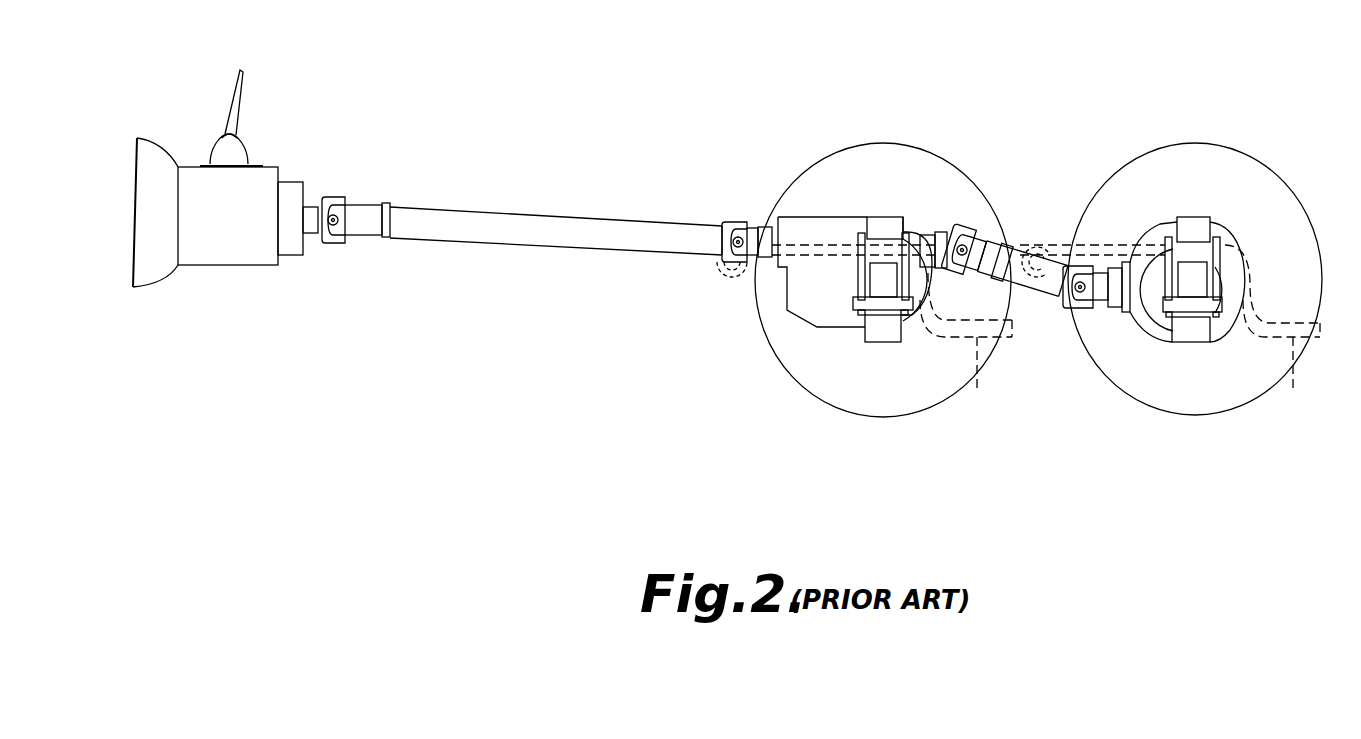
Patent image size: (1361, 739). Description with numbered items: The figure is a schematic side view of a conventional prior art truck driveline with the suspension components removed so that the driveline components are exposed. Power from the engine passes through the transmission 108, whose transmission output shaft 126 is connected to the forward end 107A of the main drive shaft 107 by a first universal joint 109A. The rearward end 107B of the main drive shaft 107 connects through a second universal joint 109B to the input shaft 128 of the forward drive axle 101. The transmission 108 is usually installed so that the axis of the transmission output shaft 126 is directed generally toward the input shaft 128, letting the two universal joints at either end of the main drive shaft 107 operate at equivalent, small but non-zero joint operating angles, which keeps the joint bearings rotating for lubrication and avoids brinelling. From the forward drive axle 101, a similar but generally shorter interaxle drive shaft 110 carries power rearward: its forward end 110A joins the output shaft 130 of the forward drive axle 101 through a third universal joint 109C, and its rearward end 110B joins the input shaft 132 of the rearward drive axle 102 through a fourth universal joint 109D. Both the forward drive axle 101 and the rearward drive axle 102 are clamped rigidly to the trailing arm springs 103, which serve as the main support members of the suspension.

The forward drive axle 101 is at (835, 297).
The rearward drive axle 102 is at (1191, 320).
The trailing arm springs 103 is at (977, 393).
The main drive shaft 107 is at (493, 242).
The forward end of the main drive shaft 107A is at (367, 210).
The rearward end of the main drive shaft 107B is at (702, 242).
The transmission 108 is at (242, 209).
The first universal joint 109A is at (334, 244).
The second universal joint 109B is at (730, 224).
The third universal joint 109C is at (970, 230).
The fourth universal joint 109D is at (1073, 310).
The interaxle drive shaft 110 is at (1050, 292).
The forward end of the interaxle drive shaft 110A is at (995, 243).
The rearward end of the interaxle drive shaft 110B is at (1069, 258).
The transmission output shaft 126 is at (311, 198).
The input shaft of the forward drive axle 128 is at (763, 323).
The output shaft of the forward drive axle 130 is at (938, 240).
The input shaft of the rearward drive axle 132 is at (1108, 309).